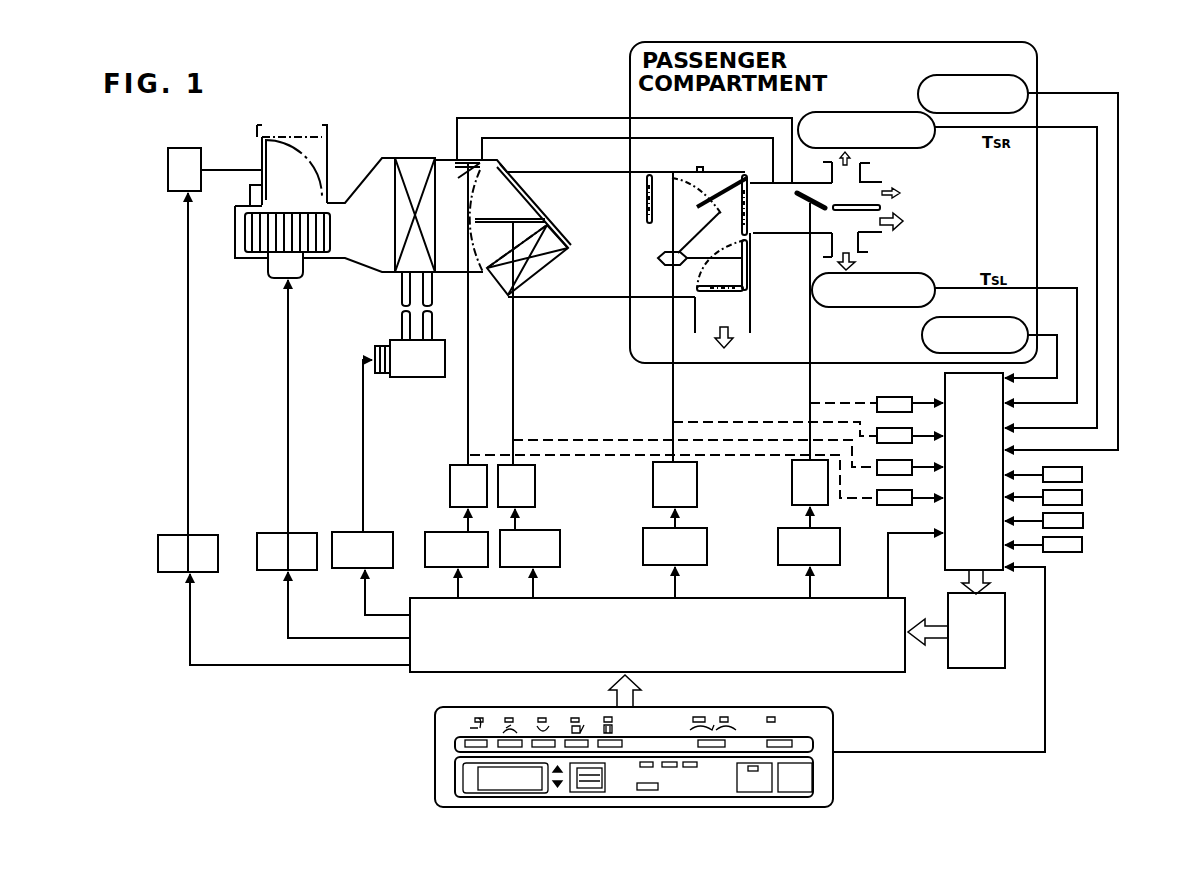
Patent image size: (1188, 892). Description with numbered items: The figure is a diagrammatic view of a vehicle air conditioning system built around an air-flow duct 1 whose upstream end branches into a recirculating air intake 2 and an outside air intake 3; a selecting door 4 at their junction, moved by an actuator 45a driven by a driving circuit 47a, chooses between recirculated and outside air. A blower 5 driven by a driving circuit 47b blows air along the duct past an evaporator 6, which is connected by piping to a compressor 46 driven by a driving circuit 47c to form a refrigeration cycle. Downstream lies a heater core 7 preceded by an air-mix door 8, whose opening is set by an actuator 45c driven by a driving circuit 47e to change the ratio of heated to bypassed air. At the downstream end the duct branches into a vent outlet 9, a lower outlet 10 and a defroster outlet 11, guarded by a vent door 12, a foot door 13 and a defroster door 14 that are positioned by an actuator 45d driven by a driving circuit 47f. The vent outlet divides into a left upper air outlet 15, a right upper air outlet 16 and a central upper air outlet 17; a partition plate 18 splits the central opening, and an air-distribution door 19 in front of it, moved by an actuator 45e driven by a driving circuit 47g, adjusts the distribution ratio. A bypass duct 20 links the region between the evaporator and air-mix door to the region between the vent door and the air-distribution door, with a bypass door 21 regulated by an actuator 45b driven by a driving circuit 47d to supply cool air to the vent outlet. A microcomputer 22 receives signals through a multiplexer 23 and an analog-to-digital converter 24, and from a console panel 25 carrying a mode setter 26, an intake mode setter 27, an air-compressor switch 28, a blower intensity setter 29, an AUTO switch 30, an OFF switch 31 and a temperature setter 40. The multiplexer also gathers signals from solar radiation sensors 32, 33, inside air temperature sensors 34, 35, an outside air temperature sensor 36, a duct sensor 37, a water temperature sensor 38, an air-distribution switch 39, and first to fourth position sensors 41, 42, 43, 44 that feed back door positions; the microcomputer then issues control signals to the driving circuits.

The air-flow duct 1 is at (368, 172).
The recirculating air intake 2 is at (262, 142).
The outside air intake 3 is at (292, 134).
The selecting door 4 is at (262, 186).
The blower 5 is at (262, 235).
The evaporator 6 is at (412, 167).
The heater core 7 is at (530, 268).
The air-mix door 8 is at (483, 272).
The vent outlet 9 is at (902, 177).
The lower outlet 10 is at (723, 313).
The defroster outlet 11 is at (686, 173).
The vent door 12 is at (722, 176).
The foot door 13 is at (747, 270).
The defroster door 14 is at (665, 175).
The left upper air outlet 15 is at (847, 242).
The right upper air outlet 16 is at (845, 173).
The central upper air outlet 17 is at (883, 207).
The partition plate 18 is at (862, 212).
The air-distribution door 19 is at (802, 196).
The bypass duct 20 is at (553, 137).
The bypass door 21 is at (478, 163).
The microcomputer 22 is at (874, 672).
The multiplexer 23 is at (950, 555).
The analog-to-digital converter 24 is at (978, 668).
The console panel 25 is at (433, 755).
The mode setter 26 is at (527, 740).
The intake mode setter 27 is at (713, 740).
The air-compressor switch 28 is at (793, 740).
The blower intensity setter 29 is at (650, 790).
The AUTO switch 30 is at (748, 792).
The OFF switch 31 is at (795, 792).
The solar radiation sensor 32 is at (925, 278).
The solar radiation sensor 33 is at (868, 120).
The inside air temperature sensor 34 is at (922, 95).
The inside air temperature sensor 35 is at (924, 338).
The outside air temperature sensor 36 is at (1082, 475).
The duct sensor 37 is at (1082, 498).
The water temperature sensor 38 is at (1083, 521).
The air-distribution switch 39 is at (1082, 545).
The temperature setter 40 is at (583, 790).
The first position sensor 41 is at (887, 397).
The second position sensor 42 is at (910, 428).
The third position sensor 43 is at (910, 475).
The fourth position sensor 44 is at (888, 504).
The actuator 45a is at (170, 172).
The actuator 45b is at (452, 480).
The actuator 45c is at (530, 480).
The actuator 45d is at (653, 486).
The actuator 45e is at (792, 480).
The compressor 46 is at (414, 365).
The driving circuit 47a is at (170, 545).
The driving circuit 47b is at (276, 543).
The driving circuit 47c is at (350, 540).
The driving circuit 47d is at (450, 540).
The driving circuit 47e is at (552, 549).
The driving circuit 47f is at (703, 552).
The driving circuit 47g is at (785, 533).